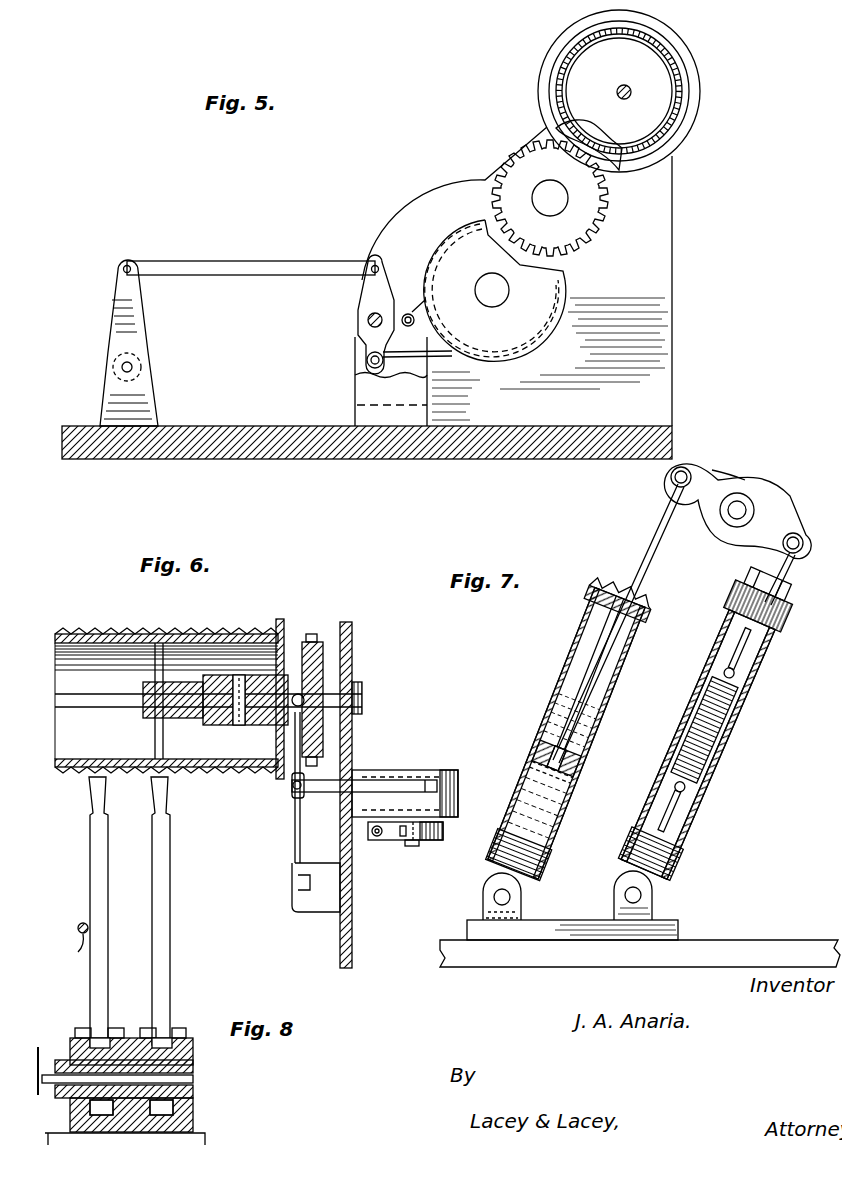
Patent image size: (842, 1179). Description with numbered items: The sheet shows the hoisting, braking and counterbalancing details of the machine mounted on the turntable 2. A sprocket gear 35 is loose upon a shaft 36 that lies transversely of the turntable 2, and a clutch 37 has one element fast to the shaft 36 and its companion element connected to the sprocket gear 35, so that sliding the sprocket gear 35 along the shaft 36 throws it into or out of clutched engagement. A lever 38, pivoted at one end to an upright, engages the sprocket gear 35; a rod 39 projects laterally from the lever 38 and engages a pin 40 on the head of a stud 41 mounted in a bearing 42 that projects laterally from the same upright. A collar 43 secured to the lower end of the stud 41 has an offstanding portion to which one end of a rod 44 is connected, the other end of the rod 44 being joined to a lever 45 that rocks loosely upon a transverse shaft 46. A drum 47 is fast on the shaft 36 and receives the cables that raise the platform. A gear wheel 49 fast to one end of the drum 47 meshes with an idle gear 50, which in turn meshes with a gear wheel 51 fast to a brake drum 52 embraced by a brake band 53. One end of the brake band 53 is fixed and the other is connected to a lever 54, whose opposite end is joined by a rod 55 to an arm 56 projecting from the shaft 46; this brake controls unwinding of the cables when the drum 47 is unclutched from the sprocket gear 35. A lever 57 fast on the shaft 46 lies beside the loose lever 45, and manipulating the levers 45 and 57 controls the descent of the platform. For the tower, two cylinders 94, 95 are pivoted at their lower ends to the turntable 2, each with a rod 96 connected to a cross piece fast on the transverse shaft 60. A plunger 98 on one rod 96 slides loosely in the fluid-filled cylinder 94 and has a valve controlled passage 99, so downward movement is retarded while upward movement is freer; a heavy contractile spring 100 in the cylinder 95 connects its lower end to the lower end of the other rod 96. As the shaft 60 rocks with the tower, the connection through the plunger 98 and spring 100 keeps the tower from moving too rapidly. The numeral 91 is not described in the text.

In FIG. 5, the turntable 2 is at (298, 459).
In FIG. 7, the turntable 2 is at (505, 967).
In FIG. 6, the sprocket gear 35 is at (345, 640).
In FIG. 5, the shaft 36 is at (617, 92).
In FIG. 6, the shaft 36 is at (105, 712).
In FIG. 6, the clutch 37 is at (228, 725).
In FIG. 6, the lever 38 is at (295, 828).
In FIG. 6, the rod 39 is at (425, 780).
In FIG. 6, the pin 40 is at (395, 780).
In FIG. 6, the stud 41 is at (410, 846).
In FIG. 6, the bearing 42 is at (458, 800).
In FIG. 6, the collar 43 is at (438, 840).
In FIG. 6, the rod 44 is at (378, 842).
In FIG. 8, the rod 44 is at (61, 948).
In FIG. 8, the lever 45 is at (88, 912).
In FIG. 5, the transverse shaft 46 is at (133, 367).
In FIG. 8, the transverse shaft 46 is at (47, 1075).
In FIG. 5, the drum 47 is at (690, 100).
In FIG. 6, the drum 47 is at (205, 630).
In FIG. 5, the gear wheel 49 is at (607, 150).
In FIG. 5, the idle gear 50 is at (587, 215).
In FIG. 5, the gear wheel 51 is at (565, 286).
In FIG. 5, the brake drum 52 is at (520, 335).
In FIG. 5, the brake band 53 is at (450, 354).
In FIG. 5, the lever 54 is at (362, 330).
In FIG. 5, the rod 55 is at (280, 262).
In FIG. 5, the arm 56 is at (130, 305).
In FIG. 8, the lever 57 is at (170, 932).
In FIG. 7, the transverse shaft 60 is at (748, 505).
In FIG. 7, the rocker plate 91 is at (730, 478).
In FIG. 7, the cylinder 94 is at (578, 666).
In FIG. 7, the cylinder 95 is at (745, 712).
In FIG. 7, the rod 96 is at (655, 540).
In FIG. 7, the plunger 98 is at (580, 772).
In FIG. 7, the valve controlled passage 99 is at (540, 752).
In FIG. 7, the contractile spring 100 is at (690, 815).